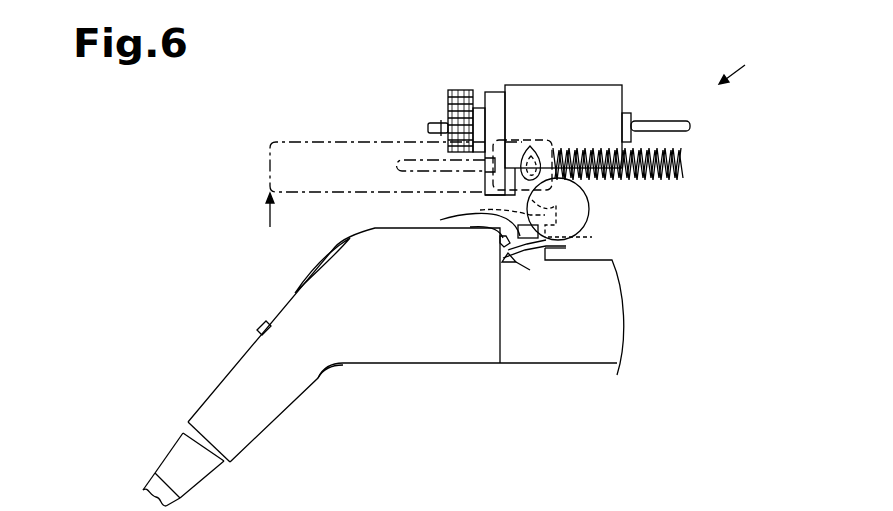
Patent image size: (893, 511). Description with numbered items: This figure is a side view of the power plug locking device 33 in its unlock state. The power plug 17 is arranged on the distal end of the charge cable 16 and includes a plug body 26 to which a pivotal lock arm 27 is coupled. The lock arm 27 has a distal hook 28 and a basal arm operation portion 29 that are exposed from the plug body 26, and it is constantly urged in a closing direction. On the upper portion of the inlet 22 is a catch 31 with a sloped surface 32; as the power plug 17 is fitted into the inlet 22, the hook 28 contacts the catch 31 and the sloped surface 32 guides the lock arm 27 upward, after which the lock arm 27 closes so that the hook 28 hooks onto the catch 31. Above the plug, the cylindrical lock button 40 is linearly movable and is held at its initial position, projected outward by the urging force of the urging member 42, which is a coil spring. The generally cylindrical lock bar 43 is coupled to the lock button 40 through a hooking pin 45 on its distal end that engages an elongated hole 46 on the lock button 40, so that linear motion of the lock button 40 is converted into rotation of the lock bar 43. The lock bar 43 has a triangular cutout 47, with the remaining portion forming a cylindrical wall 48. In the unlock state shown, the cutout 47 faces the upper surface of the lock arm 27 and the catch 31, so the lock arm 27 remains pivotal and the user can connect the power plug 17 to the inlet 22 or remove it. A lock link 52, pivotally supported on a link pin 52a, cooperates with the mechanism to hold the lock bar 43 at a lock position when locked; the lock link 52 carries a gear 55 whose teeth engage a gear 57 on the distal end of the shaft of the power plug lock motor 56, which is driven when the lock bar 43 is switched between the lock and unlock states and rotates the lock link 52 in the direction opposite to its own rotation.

The charge cable 16 is at (150, 483).
The power plug 17 is at (450, 364).
The inlet 22 is at (563, 363).
The plug body 26 is at (385, 363).
The lock arm 27 is at (500, 240).
The hook 28 is at (463, 219).
The arm operation portion 29 is at (300, 276).
The catch 31 is at (560, 250).
The sloped surface 32 is at (508, 262).
The power plug locking device 33 is at (753, 67).
The lock button 40 is at (281, 141).
The urging member 42 is at (674, 180).
The lock bar 43 is at (590, 205).
The hooking pin 45 is at (535, 140).
The elongated hole 46 is at (529, 143).
The cutout 47 is at (512, 212).
The cylindrical wall 48 is at (583, 240).
The lock link 52 is at (478, 106).
The link pin 52a is at (428, 128).
The gear 55 is at (457, 88).
The power plug lock motor 56 is at (618, 86).
The gear 57 is at (448, 112).